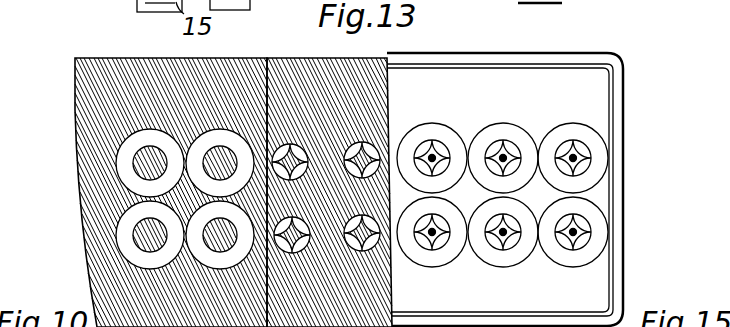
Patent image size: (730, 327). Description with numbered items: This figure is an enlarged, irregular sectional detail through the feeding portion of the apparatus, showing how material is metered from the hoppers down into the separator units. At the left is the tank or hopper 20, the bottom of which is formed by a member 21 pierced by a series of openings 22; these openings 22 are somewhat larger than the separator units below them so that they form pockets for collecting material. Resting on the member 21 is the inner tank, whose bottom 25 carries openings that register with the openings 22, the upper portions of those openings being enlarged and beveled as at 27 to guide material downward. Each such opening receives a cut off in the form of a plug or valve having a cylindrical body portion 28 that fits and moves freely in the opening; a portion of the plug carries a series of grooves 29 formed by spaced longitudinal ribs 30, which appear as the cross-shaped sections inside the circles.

The tank or hopper 20 is at (625, 108).
The member 21 is at (149, 192).
The openings 22 is at (126, 139).
The bottom 25 is at (296, 62).
The enlarged upper portions of the openings 27 is at (558, 132).
The cylindrical body portion 28 is at (133, 163).
The grooves 29 is at (513, 170).
The longitudinal ribs 30 is at (354, 144).